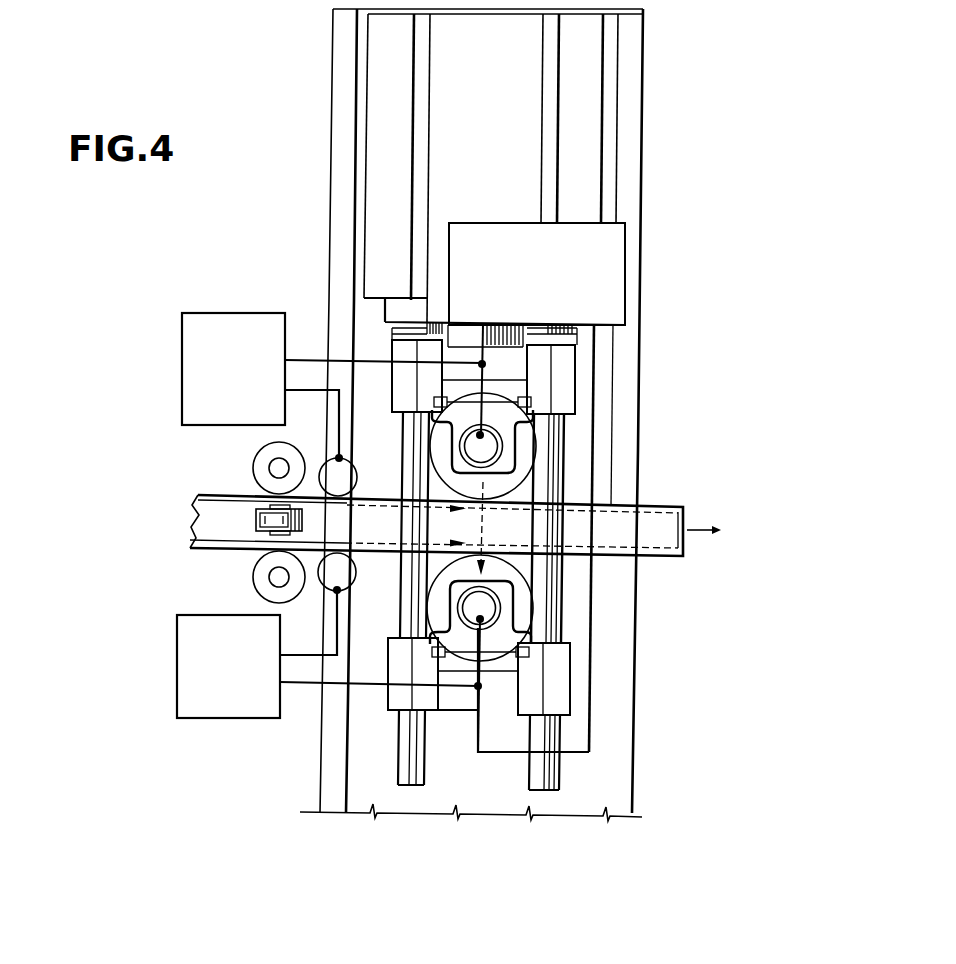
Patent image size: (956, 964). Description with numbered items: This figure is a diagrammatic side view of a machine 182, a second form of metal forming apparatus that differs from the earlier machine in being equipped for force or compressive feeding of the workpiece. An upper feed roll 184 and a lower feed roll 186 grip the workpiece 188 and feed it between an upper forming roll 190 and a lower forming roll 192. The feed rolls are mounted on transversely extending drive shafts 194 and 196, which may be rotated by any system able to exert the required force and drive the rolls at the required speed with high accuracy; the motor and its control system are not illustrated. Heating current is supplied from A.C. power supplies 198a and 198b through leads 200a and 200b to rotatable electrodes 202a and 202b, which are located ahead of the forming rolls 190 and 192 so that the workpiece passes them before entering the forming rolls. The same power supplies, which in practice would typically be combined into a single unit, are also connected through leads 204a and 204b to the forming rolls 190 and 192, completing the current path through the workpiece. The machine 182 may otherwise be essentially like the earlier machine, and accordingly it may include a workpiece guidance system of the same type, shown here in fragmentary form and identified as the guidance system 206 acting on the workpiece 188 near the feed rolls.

The machine 182 is at (303, 224).
The upper feed roll 184 is at (253, 475).
The lower feed roll 186 is at (254, 573).
The workpiece 188 is at (195, 512).
The upper forming roll 190 is at (525, 473).
The lower forming roll 192 is at (527, 600).
The drive shaft 194 is at (272, 463).
The drive shaft 196 is at (270, 580).
The A.C. power supply 198a is at (200, 312).
The A.C. power supply 198b is at (176, 654).
The lead 200a is at (341, 445).
The lead 200b is at (339, 632).
The rotatable electrode 202a is at (354, 478).
The rotatable electrode 202b is at (350, 587).
The lead 204a is at (313, 357).
The lead 204b is at (308, 684).
The workpiece guidance system 206 is at (243, 511).